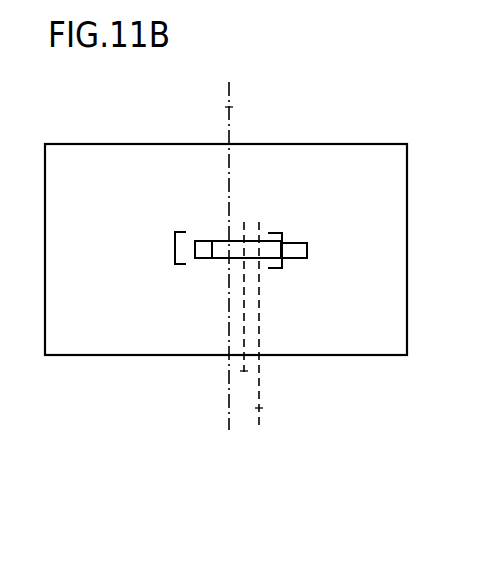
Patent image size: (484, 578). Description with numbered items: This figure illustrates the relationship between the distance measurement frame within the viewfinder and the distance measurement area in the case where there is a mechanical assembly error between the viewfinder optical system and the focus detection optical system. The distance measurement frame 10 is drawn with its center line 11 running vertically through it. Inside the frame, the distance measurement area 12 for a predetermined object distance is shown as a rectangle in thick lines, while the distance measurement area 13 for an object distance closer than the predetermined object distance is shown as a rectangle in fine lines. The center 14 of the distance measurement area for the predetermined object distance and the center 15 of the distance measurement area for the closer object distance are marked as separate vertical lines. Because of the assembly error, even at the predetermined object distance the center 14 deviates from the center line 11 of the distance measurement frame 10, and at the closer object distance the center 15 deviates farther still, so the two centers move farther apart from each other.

The distance measurement frame 10 is at (264, 259).
The center line of the distance measurement frame 11 is at (232, 107).
The distance measurement area for a predetermined object distance 12 is at (195, 259).
The distance measurement area for a closer object distance 13 is at (307, 251).
The center of the distance measurement area for the predetermined object distance 14 is at (243, 371).
The center of the distance measurement area for the closer object distance 15 is at (260, 408).